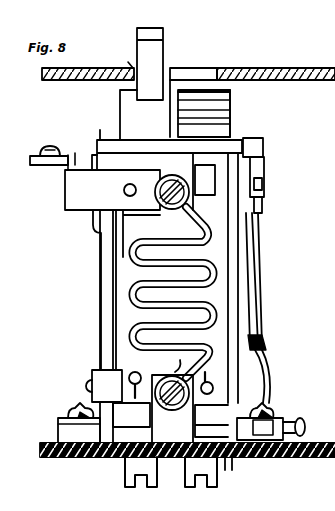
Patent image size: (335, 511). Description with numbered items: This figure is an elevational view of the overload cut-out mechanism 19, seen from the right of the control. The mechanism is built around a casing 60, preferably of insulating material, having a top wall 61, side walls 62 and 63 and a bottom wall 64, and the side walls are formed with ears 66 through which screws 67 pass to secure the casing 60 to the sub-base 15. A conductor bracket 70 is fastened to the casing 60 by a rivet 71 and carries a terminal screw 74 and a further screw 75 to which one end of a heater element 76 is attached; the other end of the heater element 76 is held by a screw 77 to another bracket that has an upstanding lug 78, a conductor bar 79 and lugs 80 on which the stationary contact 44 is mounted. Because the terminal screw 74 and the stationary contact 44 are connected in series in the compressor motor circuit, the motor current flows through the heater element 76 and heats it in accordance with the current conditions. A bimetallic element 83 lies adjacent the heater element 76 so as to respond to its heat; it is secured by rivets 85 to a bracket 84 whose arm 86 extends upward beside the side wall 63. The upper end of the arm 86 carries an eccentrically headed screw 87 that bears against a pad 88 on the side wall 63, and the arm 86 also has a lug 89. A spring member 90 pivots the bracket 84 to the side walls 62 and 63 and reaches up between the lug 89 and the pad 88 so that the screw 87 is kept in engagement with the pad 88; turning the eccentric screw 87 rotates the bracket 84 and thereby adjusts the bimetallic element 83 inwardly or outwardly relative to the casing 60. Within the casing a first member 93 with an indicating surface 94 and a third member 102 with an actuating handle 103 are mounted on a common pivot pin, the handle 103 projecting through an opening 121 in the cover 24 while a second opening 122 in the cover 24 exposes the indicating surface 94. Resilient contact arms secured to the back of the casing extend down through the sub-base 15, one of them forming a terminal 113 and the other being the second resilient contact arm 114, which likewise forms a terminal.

The sub-base 15 is at (252, 458).
The overload cut-out mechanism 19 is at (296, 125).
The cover 24 is at (245, 68).
The stationary contact 44 is at (306, 427).
The casing 60 is at (100, 132).
The top wall 61 is at (231, 137).
The side wall 62 is at (98, 283).
The side wall 63 is at (241, 281).
The bottom wall 64 is at (100, 450).
The ears 66 is at (58, 426).
The screws 67 is at (70, 403).
The conductor bracket 70 is at (66, 205).
The rivet 71 is at (124, 190).
The terminal screw 74 is at (44, 146).
The screw 75 is at (160, 180).
The heater element 76 is at (142, 310).
The screw 77 is at (176, 370).
The upstanding lug 78 is at (181, 438).
The conductor bar 79 is at (229, 460).
The lugs 80 is at (290, 421).
The bimetallic element 83 is at (130, 336).
The bracket 84 is at (92, 372).
The rivets 85 is at (165, 396).
The arm 86 is at (265, 155).
The eccentrically headed screw 87 is at (265, 175).
The pad 88 is at (262, 138).
The lug 89 is at (263, 339).
The spring member 90 is at (258, 306).
The first member 93 is at (227, 117).
The indicating surface 94 is at (216, 90).
The third member 102 is at (118, 98).
The actuating handle 103 is at (160, 52).
The terminal 113 is at (216, 486).
The second resilient contact arm 114 is at (124, 481).
The opening 121 is at (131, 67).
The opening 122 is at (208, 69).